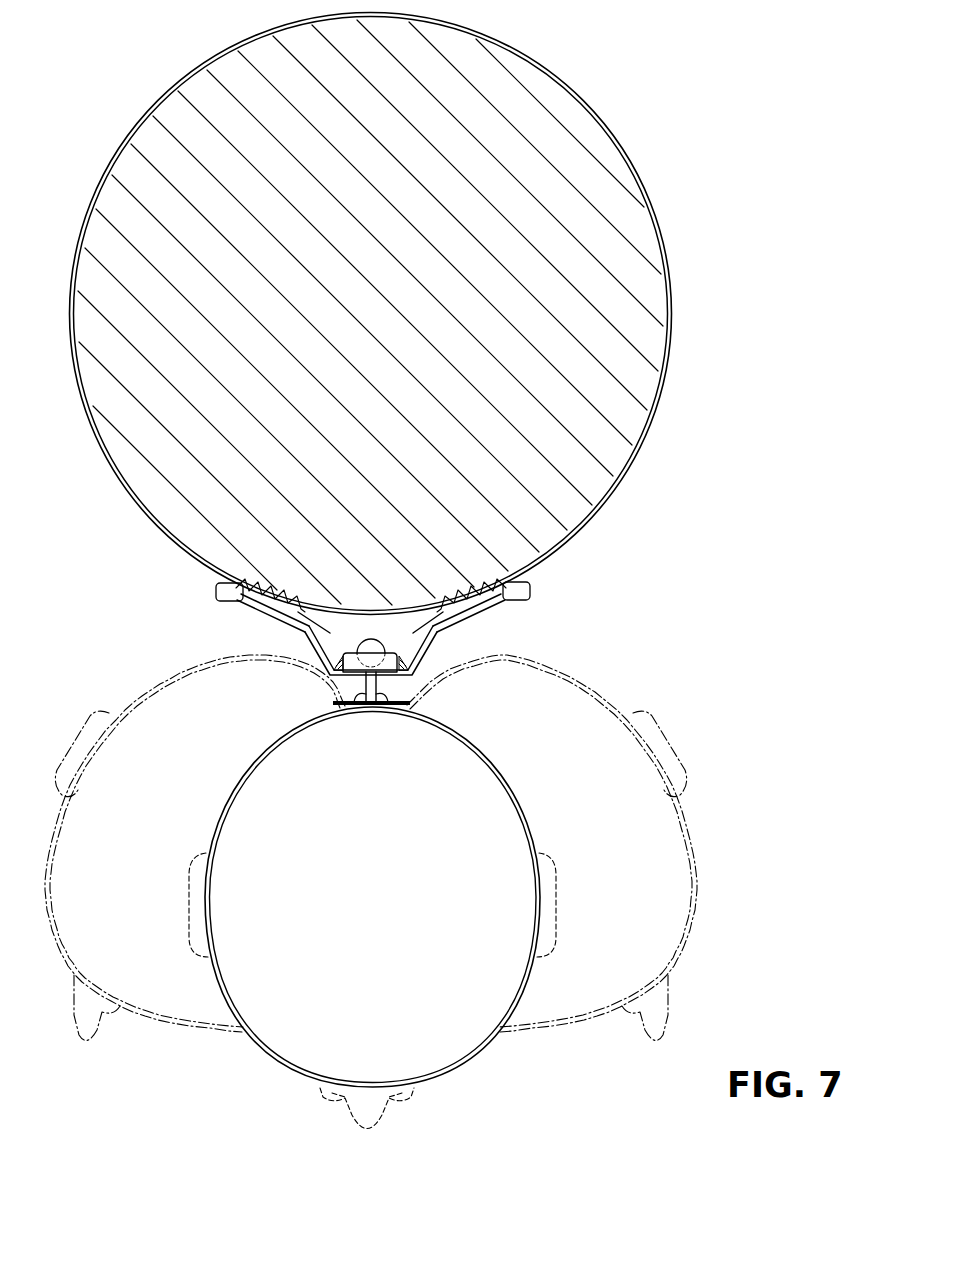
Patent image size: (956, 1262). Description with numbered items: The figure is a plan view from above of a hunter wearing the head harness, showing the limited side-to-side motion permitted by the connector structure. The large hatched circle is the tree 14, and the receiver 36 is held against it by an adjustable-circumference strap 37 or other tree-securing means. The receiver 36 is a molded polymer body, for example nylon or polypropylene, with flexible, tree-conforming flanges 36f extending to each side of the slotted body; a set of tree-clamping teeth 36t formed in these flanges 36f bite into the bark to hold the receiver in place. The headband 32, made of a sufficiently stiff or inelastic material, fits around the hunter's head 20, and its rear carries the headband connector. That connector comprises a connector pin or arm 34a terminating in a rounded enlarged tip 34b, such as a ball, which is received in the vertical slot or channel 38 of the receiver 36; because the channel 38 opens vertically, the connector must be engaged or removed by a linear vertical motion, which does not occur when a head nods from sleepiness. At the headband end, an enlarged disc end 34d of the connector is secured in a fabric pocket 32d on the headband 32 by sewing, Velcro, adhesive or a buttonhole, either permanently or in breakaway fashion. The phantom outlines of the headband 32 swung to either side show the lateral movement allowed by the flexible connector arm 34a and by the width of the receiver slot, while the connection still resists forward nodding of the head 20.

The tree 14 is at (548, 131).
The adjustable-circumference strap 37 is at (678, 274).
The receiver 36 is at (474, 641).
The tree-conforming flanges 36f is at (215, 594).
The tree-clamping teeth 36t is at (262, 611).
The vertical slot or channel 38 is at (326, 663).
The rounded enlarged tip 34b is at (362, 643).
The connector pin or arm 34a is at (393, 708).
The enlarged disc end 34d is at (369, 708).
The fabric pocket 32d is at (340, 708).
The headband 32 is at (130, 708).
The head 20 is at (477, 853).